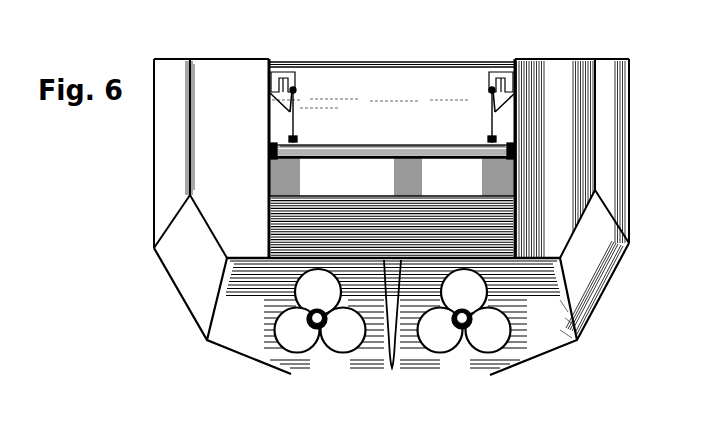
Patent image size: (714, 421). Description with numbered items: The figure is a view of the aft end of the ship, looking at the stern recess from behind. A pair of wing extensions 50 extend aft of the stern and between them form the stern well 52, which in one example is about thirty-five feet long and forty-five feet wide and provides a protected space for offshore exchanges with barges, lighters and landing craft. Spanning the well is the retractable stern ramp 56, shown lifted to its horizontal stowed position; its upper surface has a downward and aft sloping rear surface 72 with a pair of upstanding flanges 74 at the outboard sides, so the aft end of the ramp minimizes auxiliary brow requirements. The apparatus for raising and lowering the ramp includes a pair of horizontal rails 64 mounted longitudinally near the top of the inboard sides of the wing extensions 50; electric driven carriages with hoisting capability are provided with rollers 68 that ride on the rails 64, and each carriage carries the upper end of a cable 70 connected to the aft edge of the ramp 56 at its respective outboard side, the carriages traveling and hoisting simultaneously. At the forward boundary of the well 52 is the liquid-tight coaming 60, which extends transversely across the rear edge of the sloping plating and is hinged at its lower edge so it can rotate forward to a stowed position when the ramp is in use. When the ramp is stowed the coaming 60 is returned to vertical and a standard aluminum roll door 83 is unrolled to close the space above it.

The wing extensions 50 is at (268, 55).
The stern well 52 is at (434, 95).
The aluminum roll door 83 is at (361, 73).
The retractable stern ramp 56 is at (412, 153).
The rear surface 72 is at (443, 150).
The upstanding flanges 74 is at (515, 153).
The coaming 60 is at (372, 188).
The rollers 68 is at (510, 80).
The horizontal rails 64 is at (517, 95).
The cable 70 is at (490, 117).